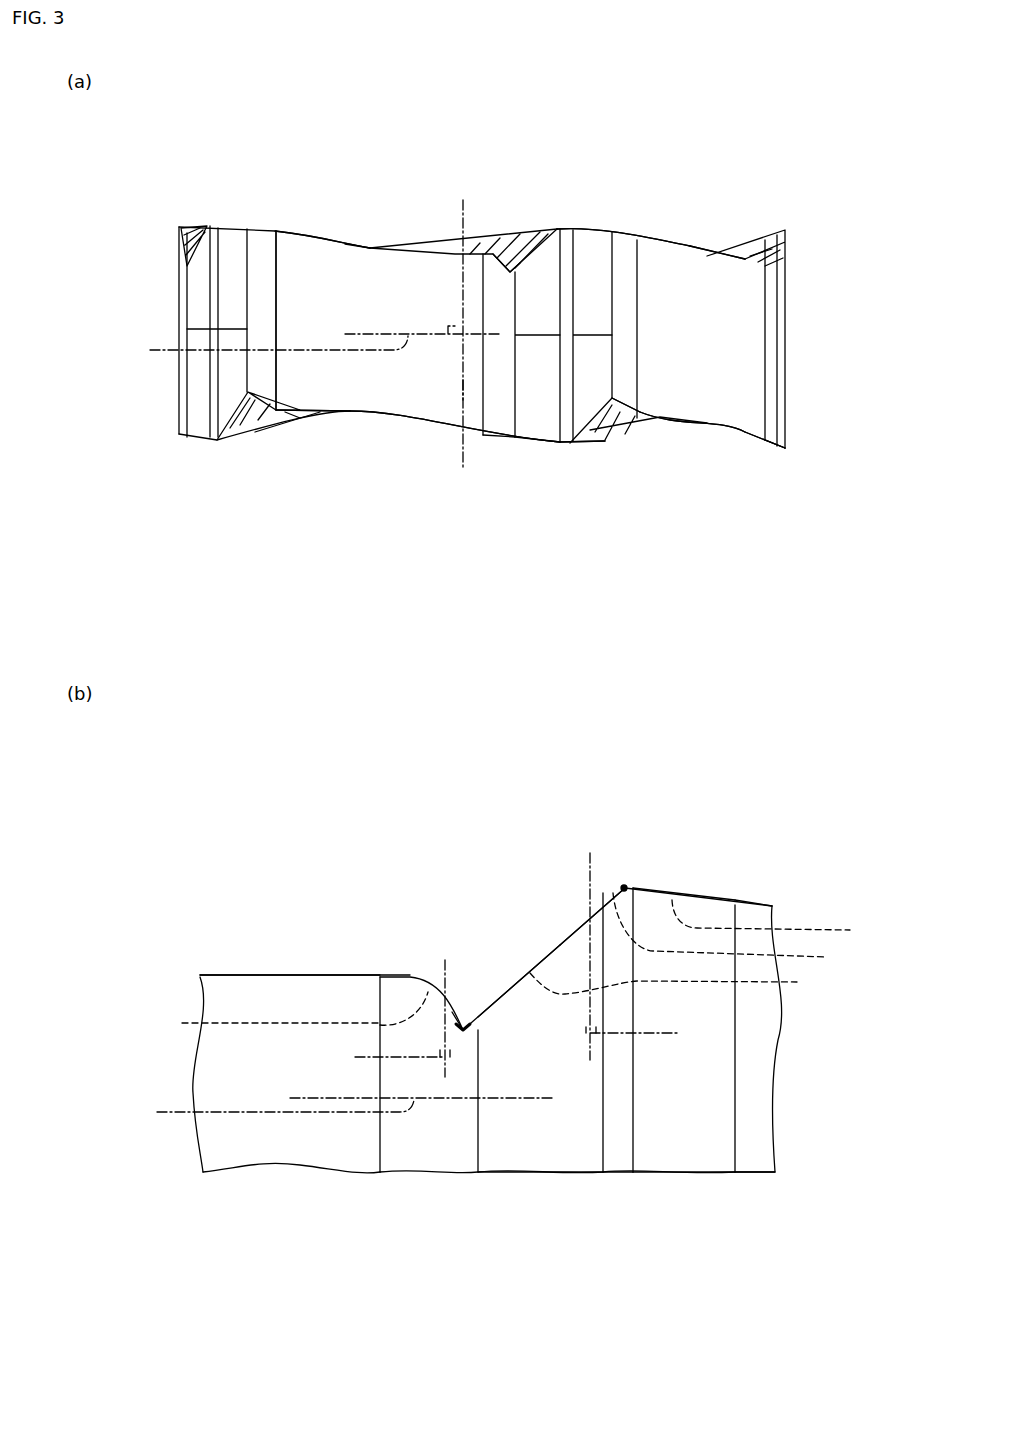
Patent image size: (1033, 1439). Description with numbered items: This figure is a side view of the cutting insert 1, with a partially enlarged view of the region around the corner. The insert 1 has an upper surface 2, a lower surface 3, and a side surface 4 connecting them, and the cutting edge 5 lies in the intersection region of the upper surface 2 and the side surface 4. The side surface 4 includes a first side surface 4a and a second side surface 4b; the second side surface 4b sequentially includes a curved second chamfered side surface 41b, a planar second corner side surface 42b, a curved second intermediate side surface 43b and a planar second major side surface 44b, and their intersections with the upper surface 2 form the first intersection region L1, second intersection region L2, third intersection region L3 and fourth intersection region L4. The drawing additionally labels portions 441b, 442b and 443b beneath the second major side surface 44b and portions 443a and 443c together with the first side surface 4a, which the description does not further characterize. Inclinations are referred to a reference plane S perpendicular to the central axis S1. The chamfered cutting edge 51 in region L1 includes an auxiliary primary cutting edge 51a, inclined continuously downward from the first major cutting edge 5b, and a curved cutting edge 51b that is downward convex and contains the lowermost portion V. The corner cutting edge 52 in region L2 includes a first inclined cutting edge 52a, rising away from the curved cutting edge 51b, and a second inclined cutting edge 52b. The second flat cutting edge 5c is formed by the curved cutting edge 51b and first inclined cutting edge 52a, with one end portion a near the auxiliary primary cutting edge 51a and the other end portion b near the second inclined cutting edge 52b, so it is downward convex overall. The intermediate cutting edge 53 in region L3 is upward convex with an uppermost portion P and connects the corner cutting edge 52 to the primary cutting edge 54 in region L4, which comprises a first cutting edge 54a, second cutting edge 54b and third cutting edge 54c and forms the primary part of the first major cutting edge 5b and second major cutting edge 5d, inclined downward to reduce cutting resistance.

The insert 1 is at (798, 228).
The upper surface 2 is at (297, 237).
The lower surface 3 is at (440, 426).
The side surface 4 is at (312, 297).
The first side surface 4a is at (294, 841).
The second side surface 4b is at (745, 578).
The second chamfered side surface 41b is at (502, 431).
The second corner side surface 42b is at (537, 431).
The second intermediate side surface 43b is at (577, 444).
The second major side surface 44b is at (810, 536).
The first part of fourth surface portion 441b is at (605, 398).
The second part of fourth surface portion 442b is at (653, 383).
The third part of pressure side surface 443a is at (337, 393).
The third part of fourth surface portion 443b is at (728, 380).
The third part of pressure side surface 443c is at (287, 1141).
The cutting edge 5 is at (232, 226).
The first major cutting edge 5b is at (366, 250).
The second flat cutting edge 5c is at (568, 742).
The second major cutting edge 5d is at (733, 164).
The chamfered cutting edge 51 is at (491, 247).
The auxiliary primary cutting edge 51a is at (415, 978).
The curved cutting edge 51b is at (458, 1025).
The corner cutting edge 52 is at (539, 248).
The first inclined cutting edge 52a is at (545, 990).
The second inclined cutting edge 52b is at (600, 890).
The intermediate cutting edge 53 is at (620, 643).
The primary cutting edge 54 is at (672, 647).
The first cutting edge 54a is at (594, 228).
The second cutting edge 54b is at (623, 238).
The third cutting edge 54c is at (472, 555).
The lowermost portion V is at (509, 270).
The uppermost portion P is at (563, 229).
The reference plane S is at (341, 661).
The central axis S1 is at (465, 383).
The first intersection region L1 is at (291, 1013).
The second intersection region L2 is at (677, 983).
The third intersection region L3 is at (733, 931).
The fourth intersection region L4 is at (774, 921).
The one end portion a is at (393, 1018).
The other end portion b is at (642, 956).